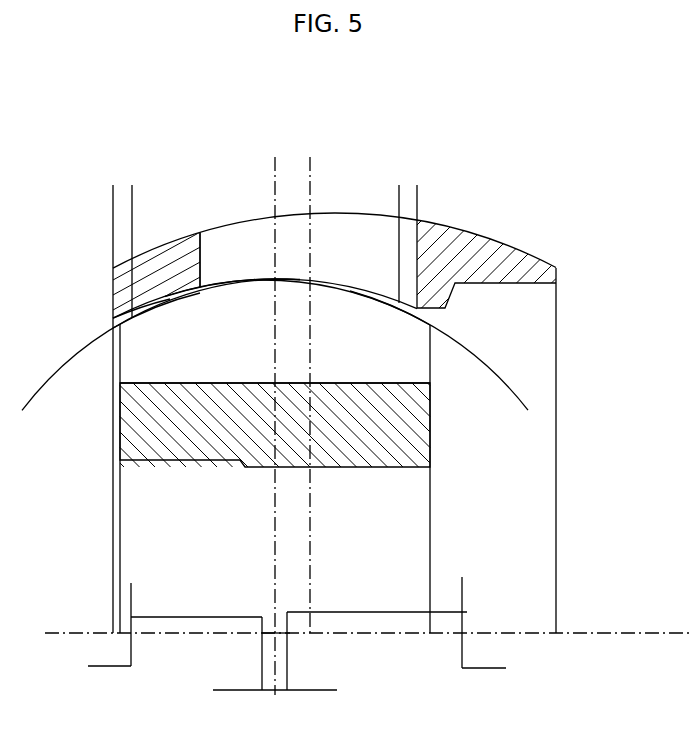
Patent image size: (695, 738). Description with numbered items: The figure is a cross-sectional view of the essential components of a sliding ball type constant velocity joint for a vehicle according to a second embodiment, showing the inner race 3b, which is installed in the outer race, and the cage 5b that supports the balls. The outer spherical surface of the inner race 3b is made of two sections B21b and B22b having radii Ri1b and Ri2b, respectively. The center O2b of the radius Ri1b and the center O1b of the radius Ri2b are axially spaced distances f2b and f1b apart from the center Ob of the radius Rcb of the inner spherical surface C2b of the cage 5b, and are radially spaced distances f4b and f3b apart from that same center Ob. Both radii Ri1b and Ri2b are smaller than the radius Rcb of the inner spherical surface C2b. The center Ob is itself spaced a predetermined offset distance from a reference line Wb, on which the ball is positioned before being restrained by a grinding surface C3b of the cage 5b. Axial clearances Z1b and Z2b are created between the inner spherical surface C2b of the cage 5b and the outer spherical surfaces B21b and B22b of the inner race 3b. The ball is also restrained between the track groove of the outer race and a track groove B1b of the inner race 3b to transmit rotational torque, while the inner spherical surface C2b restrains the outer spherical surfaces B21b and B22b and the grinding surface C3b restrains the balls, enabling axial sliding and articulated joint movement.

The cage 5b is at (505, 258).
The inner race 3b is at (128, 423).
The radius of first outer spherical surface section Ri1b is at (38, 392).
The radius of second outer spherical surface section Ri2b is at (513, 392).
The radius of inner spherical surface of cage Rcb is at (165, 297).
The reference line Wb is at (310, 182).
The axial clearance Z1b is at (160, 190).
The axial clearance Z2b is at (375, 190).
The inner spherical surface of cage C2b is at (143, 302).
The grinding surface of cage C3b is at (202, 252).
The outer spherical surface section B21b is at (143, 304).
The outer spherical surface section B22b is at (385, 302).
The track groove of inner race B1b is at (245, 383).
The center of radius Ri2b O1b is at (262, 633).
The center of radius Ri1b O2b is at (287, 612).
The center of radius Rcb Ob is at (287, 633).
The axial distance f1b is at (244, 679).
The axial distance f2b is at (306, 679).
The radial distance f3b is at (111, 626).
The radial distance f4b is at (482, 623).